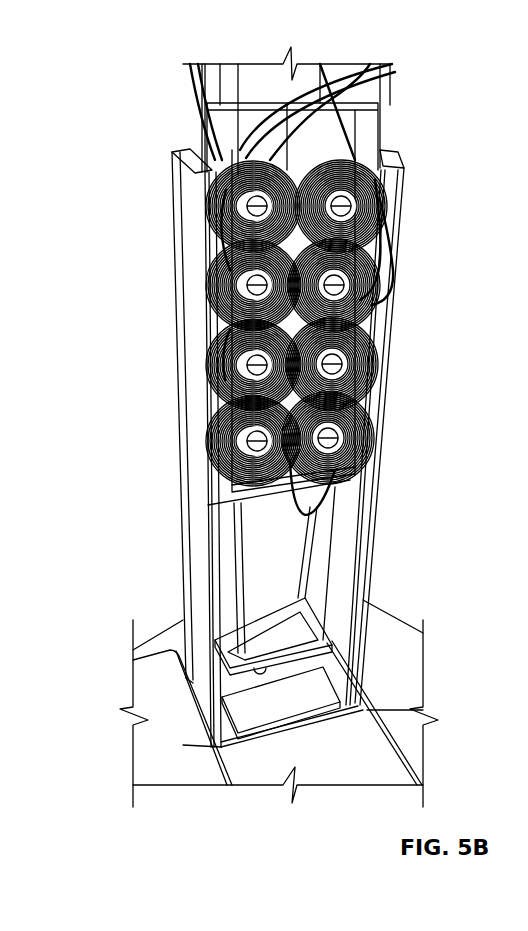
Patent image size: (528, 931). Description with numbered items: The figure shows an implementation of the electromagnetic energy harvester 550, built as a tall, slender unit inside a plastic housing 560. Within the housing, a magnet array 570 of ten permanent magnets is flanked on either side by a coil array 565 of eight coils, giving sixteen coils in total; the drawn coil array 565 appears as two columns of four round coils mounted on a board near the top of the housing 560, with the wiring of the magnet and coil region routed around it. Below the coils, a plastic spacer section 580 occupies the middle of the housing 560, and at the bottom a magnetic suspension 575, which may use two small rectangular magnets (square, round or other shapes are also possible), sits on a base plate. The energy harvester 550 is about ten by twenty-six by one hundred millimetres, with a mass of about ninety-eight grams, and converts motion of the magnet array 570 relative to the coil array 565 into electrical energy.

The energy harvester 550 is at (414, 330).
The plastic housing 560 is at (170, 205).
The coil array 565 is at (348, 158).
The magnet array 570 is at (198, 120).
The magnetic suspension 575 is at (345, 640).
The plastic spacer section 580 is at (345, 540).